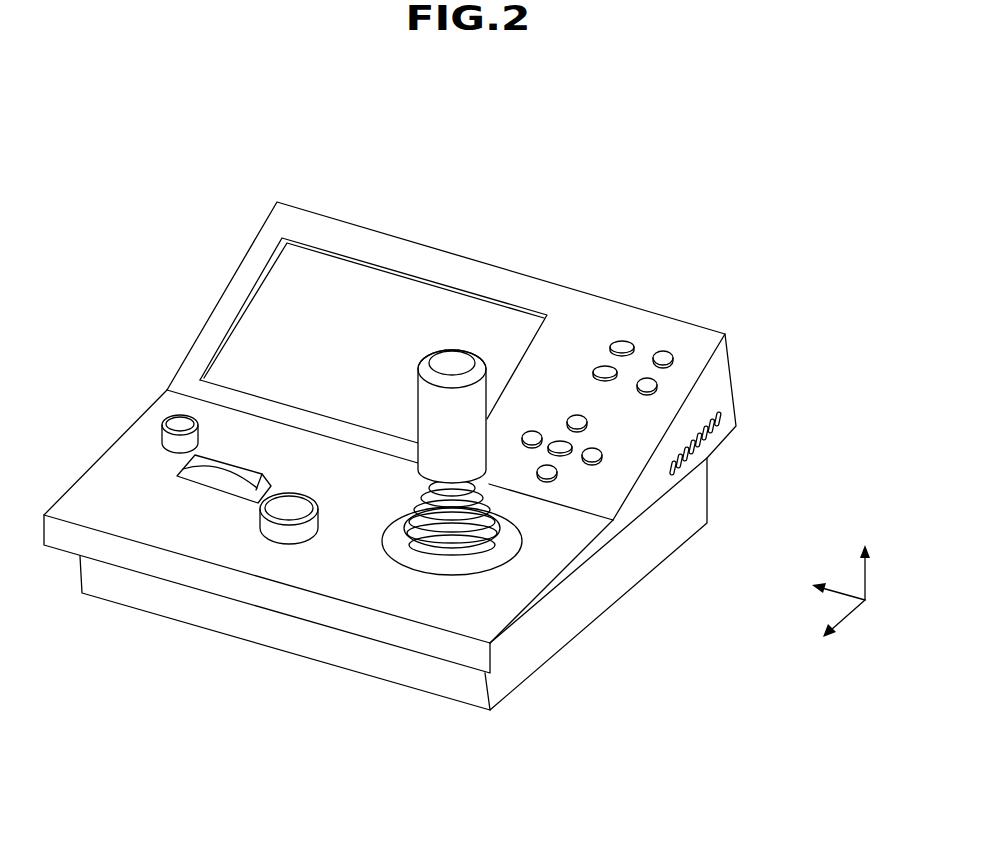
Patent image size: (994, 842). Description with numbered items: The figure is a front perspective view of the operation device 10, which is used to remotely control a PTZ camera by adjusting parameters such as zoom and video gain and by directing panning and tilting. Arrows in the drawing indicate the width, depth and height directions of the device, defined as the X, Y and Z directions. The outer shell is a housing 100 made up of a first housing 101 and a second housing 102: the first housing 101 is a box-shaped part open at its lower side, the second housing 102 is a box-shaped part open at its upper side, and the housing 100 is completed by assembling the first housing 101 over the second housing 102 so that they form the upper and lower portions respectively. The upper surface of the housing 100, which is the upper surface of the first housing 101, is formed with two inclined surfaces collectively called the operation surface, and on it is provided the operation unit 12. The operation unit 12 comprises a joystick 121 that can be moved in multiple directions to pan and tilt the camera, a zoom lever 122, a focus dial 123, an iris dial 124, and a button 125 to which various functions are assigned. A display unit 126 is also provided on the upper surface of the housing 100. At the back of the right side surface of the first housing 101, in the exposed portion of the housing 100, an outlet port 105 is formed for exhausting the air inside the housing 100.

The operation device 10 is at (147, 244).
The operation unit 12 is at (319, 447).
The housing 100 is at (838, 382).
The first housing 101 is at (736, 409).
The second housing 102 is at (708, 505).
The outlet port 105 is at (713, 424).
The joystick 121 is at (498, 538).
The zoom lever 122 is at (213, 472).
The focus dial 123 is at (264, 531).
The iris dial 124 is at (178, 422).
The button 125 is at (645, 377).
The display unit 126 is at (347, 308).